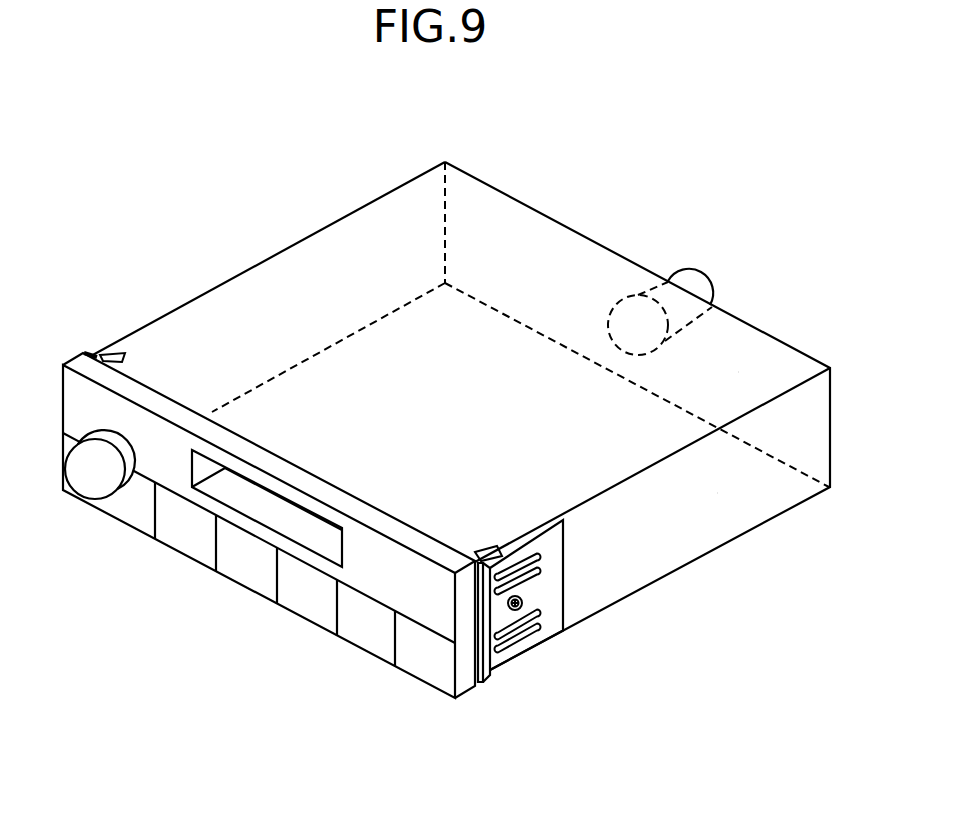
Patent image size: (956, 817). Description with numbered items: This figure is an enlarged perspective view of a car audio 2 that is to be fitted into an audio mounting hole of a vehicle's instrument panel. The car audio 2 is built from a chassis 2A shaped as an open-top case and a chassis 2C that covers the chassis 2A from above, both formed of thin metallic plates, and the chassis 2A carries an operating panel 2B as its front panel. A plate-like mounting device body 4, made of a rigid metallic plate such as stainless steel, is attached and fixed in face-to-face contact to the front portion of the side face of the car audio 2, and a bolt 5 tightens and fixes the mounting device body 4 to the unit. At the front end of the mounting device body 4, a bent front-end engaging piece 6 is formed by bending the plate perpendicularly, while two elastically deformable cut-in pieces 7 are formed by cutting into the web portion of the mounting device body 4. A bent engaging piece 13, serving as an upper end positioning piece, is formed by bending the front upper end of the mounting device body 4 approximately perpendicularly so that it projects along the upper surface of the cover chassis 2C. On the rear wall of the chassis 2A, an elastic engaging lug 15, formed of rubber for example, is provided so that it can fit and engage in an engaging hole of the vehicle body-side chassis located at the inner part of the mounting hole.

The car audio 2 is at (307, 240).
The chassis 2A is at (717, 493).
The operating panel 2B is at (413, 585).
The chassis 2C is at (738, 372).
The mounting device body 4 is at (547, 588).
The bolt 5 is at (527, 600).
The bent front-end engaging piece 6 is at (91, 352).
The cut-in pieces 7 is at (512, 633).
The bent engaging piece 13 is at (124, 358).
The elastic engaging lug 15 is at (698, 287).